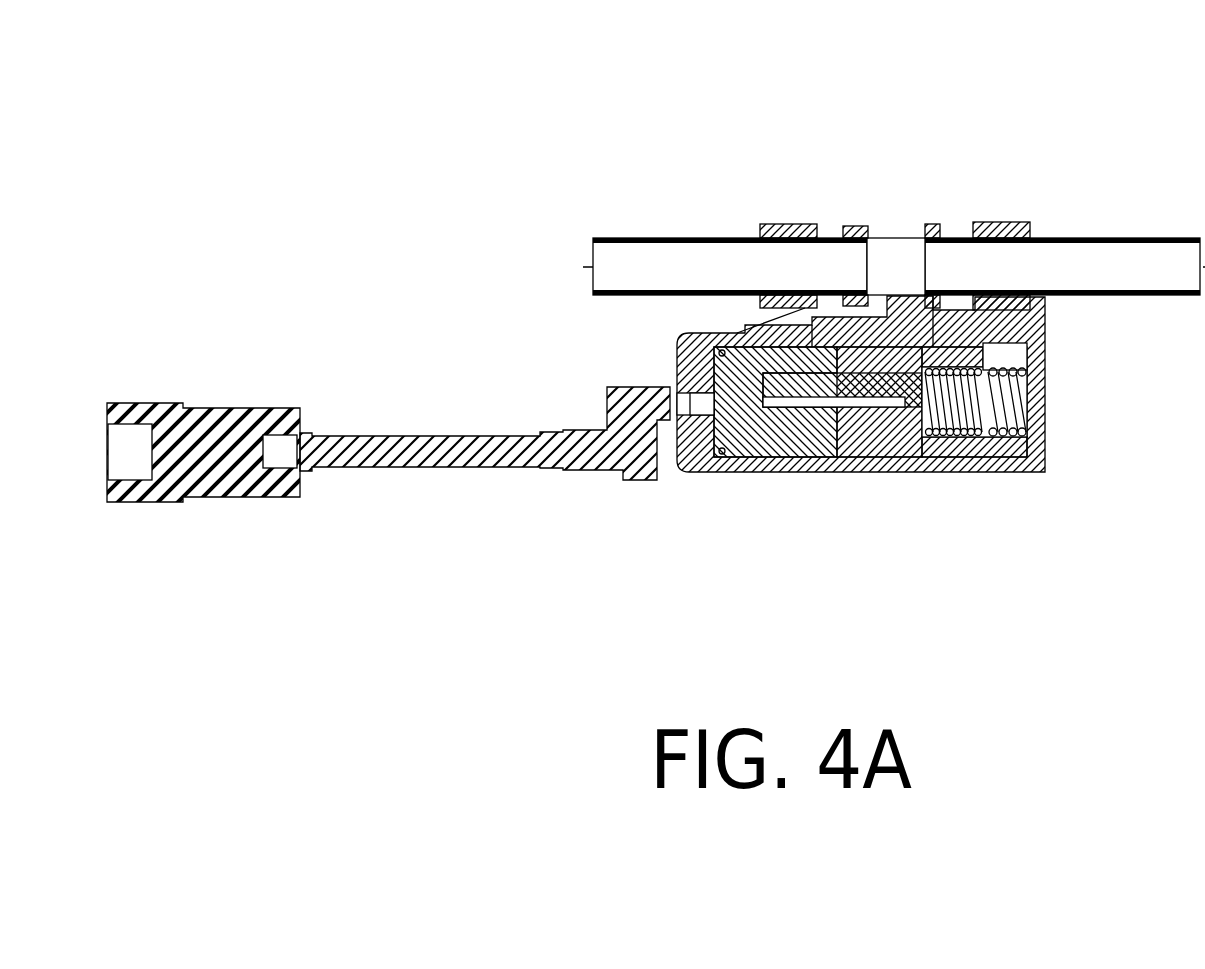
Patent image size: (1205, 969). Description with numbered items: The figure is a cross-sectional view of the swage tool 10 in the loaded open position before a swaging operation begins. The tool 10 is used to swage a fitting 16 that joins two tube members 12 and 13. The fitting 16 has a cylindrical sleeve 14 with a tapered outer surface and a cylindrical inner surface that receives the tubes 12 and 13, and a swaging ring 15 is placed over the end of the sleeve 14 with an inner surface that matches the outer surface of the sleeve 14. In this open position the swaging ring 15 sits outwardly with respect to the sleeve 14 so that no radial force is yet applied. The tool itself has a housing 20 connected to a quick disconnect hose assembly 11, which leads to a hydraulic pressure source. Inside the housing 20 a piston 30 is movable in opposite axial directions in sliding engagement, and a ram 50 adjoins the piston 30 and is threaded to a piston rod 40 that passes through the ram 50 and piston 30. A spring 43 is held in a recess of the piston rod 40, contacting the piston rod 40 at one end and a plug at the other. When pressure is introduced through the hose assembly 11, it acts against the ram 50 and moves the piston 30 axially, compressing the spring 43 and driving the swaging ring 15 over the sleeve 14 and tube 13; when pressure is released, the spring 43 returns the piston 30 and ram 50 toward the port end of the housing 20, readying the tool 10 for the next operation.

The swage tool 10 is at (1101, 533).
The quick disconnect hose assembly 11 is at (482, 403).
The tube member 12 is at (659, 227).
The tube member 13 is at (1139, 222).
The cylindrical sleeve 14 is at (933, 209).
The swaging ring 15 is at (1020, 211).
The fitting 16 is at (834, 117).
The housing 20 is at (686, 499).
The piston 30 is at (870, 447).
The piston rod 40 is at (810, 426).
The spring 43 is at (1003, 450).
The ram 50 is at (750, 449).